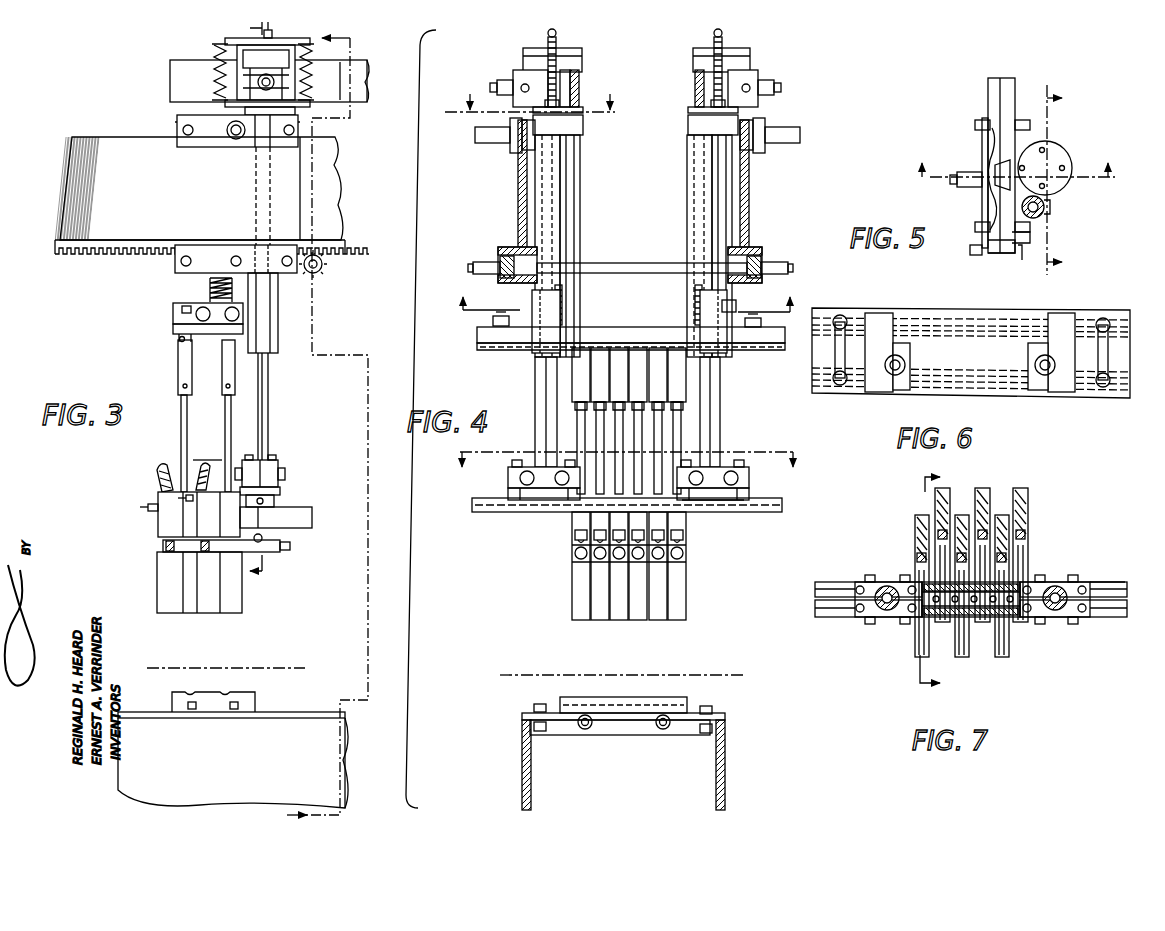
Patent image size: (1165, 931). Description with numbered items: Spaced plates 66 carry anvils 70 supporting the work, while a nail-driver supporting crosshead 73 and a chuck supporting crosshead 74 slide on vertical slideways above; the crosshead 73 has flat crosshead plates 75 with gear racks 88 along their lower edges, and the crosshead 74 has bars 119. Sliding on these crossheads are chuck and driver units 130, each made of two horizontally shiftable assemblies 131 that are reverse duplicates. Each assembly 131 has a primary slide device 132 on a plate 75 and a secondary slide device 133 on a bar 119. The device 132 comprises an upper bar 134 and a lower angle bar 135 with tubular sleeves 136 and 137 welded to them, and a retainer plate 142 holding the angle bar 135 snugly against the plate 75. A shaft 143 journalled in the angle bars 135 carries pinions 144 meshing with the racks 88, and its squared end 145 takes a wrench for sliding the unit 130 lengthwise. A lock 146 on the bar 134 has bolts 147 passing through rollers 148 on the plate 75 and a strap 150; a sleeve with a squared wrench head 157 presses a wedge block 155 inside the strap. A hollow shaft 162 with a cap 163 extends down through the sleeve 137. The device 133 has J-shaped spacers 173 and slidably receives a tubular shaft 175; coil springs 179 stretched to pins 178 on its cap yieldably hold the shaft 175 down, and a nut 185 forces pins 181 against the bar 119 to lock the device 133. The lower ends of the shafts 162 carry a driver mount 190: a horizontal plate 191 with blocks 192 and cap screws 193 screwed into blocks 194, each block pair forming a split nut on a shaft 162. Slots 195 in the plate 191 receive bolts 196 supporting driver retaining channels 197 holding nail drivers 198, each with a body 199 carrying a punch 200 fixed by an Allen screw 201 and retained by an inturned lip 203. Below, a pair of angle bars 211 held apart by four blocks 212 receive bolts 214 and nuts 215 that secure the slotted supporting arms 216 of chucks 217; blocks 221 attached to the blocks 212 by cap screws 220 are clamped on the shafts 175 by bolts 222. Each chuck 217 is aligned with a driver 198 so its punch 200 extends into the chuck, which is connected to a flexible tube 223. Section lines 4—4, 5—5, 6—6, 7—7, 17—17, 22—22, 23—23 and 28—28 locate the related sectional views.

In FIG. 3, the section line 4— 4 is at (327, 423).
In FIG. 4, the section line 5— 5 is at (530, 114).
In FIG. 4, the section line 6— 6 is at (625, 297).
In FIG. 4, the section line 7— 7 is at (628, 470).
In FIG. 5, the section line 17— 17 is at (1068, 180).
In FIG. 3, the section line 22— 22 is at (248, 28).
In FIG. 5, the section line 23— 23 is at (1016, 180).
In FIG. 7, the section line 28— 28 is at (942, 580).
In FIG. 3, the spaced plates 66 is at (348, 757).
In FIG. 4, the spaced plates 66 is at (522, 762).
In FIG. 3, the anvils 70 is at (250, 702).
In FIG. 4, the anvils 70 is at (688, 712).
In FIG. 3, the nail-driver supporting crosshead 73 is at (58, 165).
In FIG. 3, the chuck supporting crosshead 74 is at (148, 75).
In FIG. 3, the crosshead plates 75 is at (328, 233).
In FIG. 4, the crosshead plates 75 is at (518, 205).
In FIG. 5, the crosshead plates 75 is at (1008, 80).
In FIG. 3, the gear racks 88 is at (62, 247).
In FIG. 4, the gear racks 88 is at (510, 250).
In FIG. 3, the crosshead bars 119 is at (366, 78).
In FIG. 4, the crosshead bars 119 is at (580, 84).
In FIG. 4, the chuck and driver units 130 is at (772, 62).
In FIG. 4, the horizontally shiftable assemblies 131 is at (680, 128).
In FIG. 3, the primary slide device 132 is at (312, 119).
In FIG. 3, the secondary slide device 133 is at (220, 44).
In FIG. 4, the secondary slide device 133 is at (688, 60).
In FIG. 5, the upper bar 134 is at (1031, 240).
In FIG. 4, the lower angle bar 135 is at (530, 283).
In FIG. 3, the tubular sleeve 136 is at (278, 348).
In FIG. 4, the tubular sleeve 136 is at (549, 231).
In FIG. 5, the tubular sleeve 136 is at (1046, 207).
In FIG. 4, the tubular sleeve 137 is at (566, 195).
In FIG. 3, the retainer plate 142 is at (215, 256).
In FIG. 4, the retainer plate 142 is at (766, 258).
In FIG. 4, the shaft 143 is at (628, 268).
In FIG. 5, the shaft 143 is at (1022, 258).
In FIG. 3, the pinions 144 is at (323, 270).
In FIG. 4, the squared shaft end 145 is at (470, 268).
In FIG. 5, the squared shaft end 145 is at (970, 255).
In FIG. 3, the lock 146 is at (226, 142).
In FIG. 4, the lock 146 is at (777, 128).
In FIG. 5, the lock 146 is at (990, 142).
In FIG. 5, the bolts 147 is at (995, 123).
In FIG. 3, the rollers 148 is at (177, 125).
In FIG. 4, the rollers 148 is at (518, 162).
In FIG. 5, the rollers 148 is at (1005, 120).
In FIG. 5, the strap 150 is at (996, 255).
In FIG. 5, the wedge block 155 is at (993, 192).
In FIG. 3, the squared head 157 is at (242, 140).
In FIG. 4, the squared head 157 is at (482, 140).
In FIG. 5, the squared head 157 is at (975, 172).
In FIG. 3, the hollow shaft 162 is at (213, 290).
In FIG. 6, the hollow shaft 162 is at (895, 376).
In FIG. 5, the cap 163 is at (1058, 156).
In FIG. 4, the J-shaped spacers 173 is at (520, 75).
In FIG. 3, the tubular shaft 175 is at (268, 391).
In FIG. 4, the tubular shaft 175 is at (540, 371).
In FIG. 5, the tubular shaft 175 is at (1042, 216).
In FIG. 7, the tubular shaft 175 is at (890, 612).
In FIG. 3, the spring holding pins 178 is at (240, 40).
In FIG. 4, the spring holding pins 178 is at (557, 35).
In FIG. 4, the coil springs 179 is at (724, 36).
In FIG. 4, the pins 181 is at (579, 98).
In FIG. 4, the nut 185 is at (490, 88).
In FIG. 6, the driver mount 190 is at (1000, 405).
In FIG. 3, the horizontal plate 191 is at (173, 329).
In FIG. 4, the horizontal plate 191 is at (477, 335).
In FIG. 6, the horizontal plate 191 is at (937, 312).
In FIG. 3, the blocks 192 is at (173, 311).
In FIG. 4, the blocks 192 is at (736, 315).
In FIG. 6, the blocks 192 is at (878, 312).
In FIG. 3, the cap screws 193 is at (228, 312).
In FIG. 4, the cap screws 193 is at (520, 320).
In FIG. 6, the cap screws 193 is at (855, 350).
In FIG. 4, the blocks 194 is at (565, 312).
In FIG. 6, the blocks 194 is at (905, 345).
In FIG. 6, the slots 195 is at (840, 386).
In FIG. 6, the bolts 196 is at (1105, 318).
In FIG. 3, the driver retaining channels 197 is at (178, 338).
In FIG. 4, the driver retaining channels 197 is at (490, 350).
In FIG. 3, the nail drivers 198 is at (166, 458).
In FIG. 3, the driver body 199 is at (178, 372).
In FIG. 4, the driver body 199 is at (600, 380).
In FIG. 3, the punch 200 is at (222, 440).
In FIG. 4, the punch 200 is at (680, 425).
In FIG. 7, the punch 200 is at (918, 555).
In FIG. 3, the Allen screw 201 is at (184, 396).
In FIG. 3, the inturned lip 203 is at (181, 344).
In FIG. 3, the angle bars 211 is at (276, 506).
In FIG. 4, the angle bars 211 is at (505, 510).
In FIG. 7, the angle bars 211 is at (1118, 567).
In FIG. 3, the blocks 212 is at (279, 497).
In FIG. 4, the blocks 212 is at (736, 506).
In FIG. 3, the bolts 214 is at (263, 548).
In FIG. 4, the bolts 214 is at (575, 535).
In FIG. 7, the nuts 215 is at (1005, 595).
In FIG. 3, the supporting arms 216 is at (300, 516).
In FIG. 3, the chucks 217 is at (212, 530).
In FIG. 4, the chucks 217 is at (592, 604).
In FIG. 7, the chucks 217 is at (1032, 518).
In FIG. 3, the cap screws 220 is at (262, 459).
In FIG. 4, the cap screws 220 is at (740, 466).
In FIG. 7, the cap screws 220 is at (862, 585).
In FIG. 3, the blocks 221 is at (276, 463).
In FIG. 4, the blocks 221 is at (520, 483).
In FIG. 7, the blocks 221 is at (860, 613).
In FIG. 3, the bolts 222 is at (282, 488).
In FIG. 4, the bolts 222 is at (746, 490).
In FIG. 7, the bolts 222 is at (906, 576).
In FIG. 3, the flexible tube 223 is at (158, 482).
In FIG. 7, the flexible tube 223 is at (922, 522).